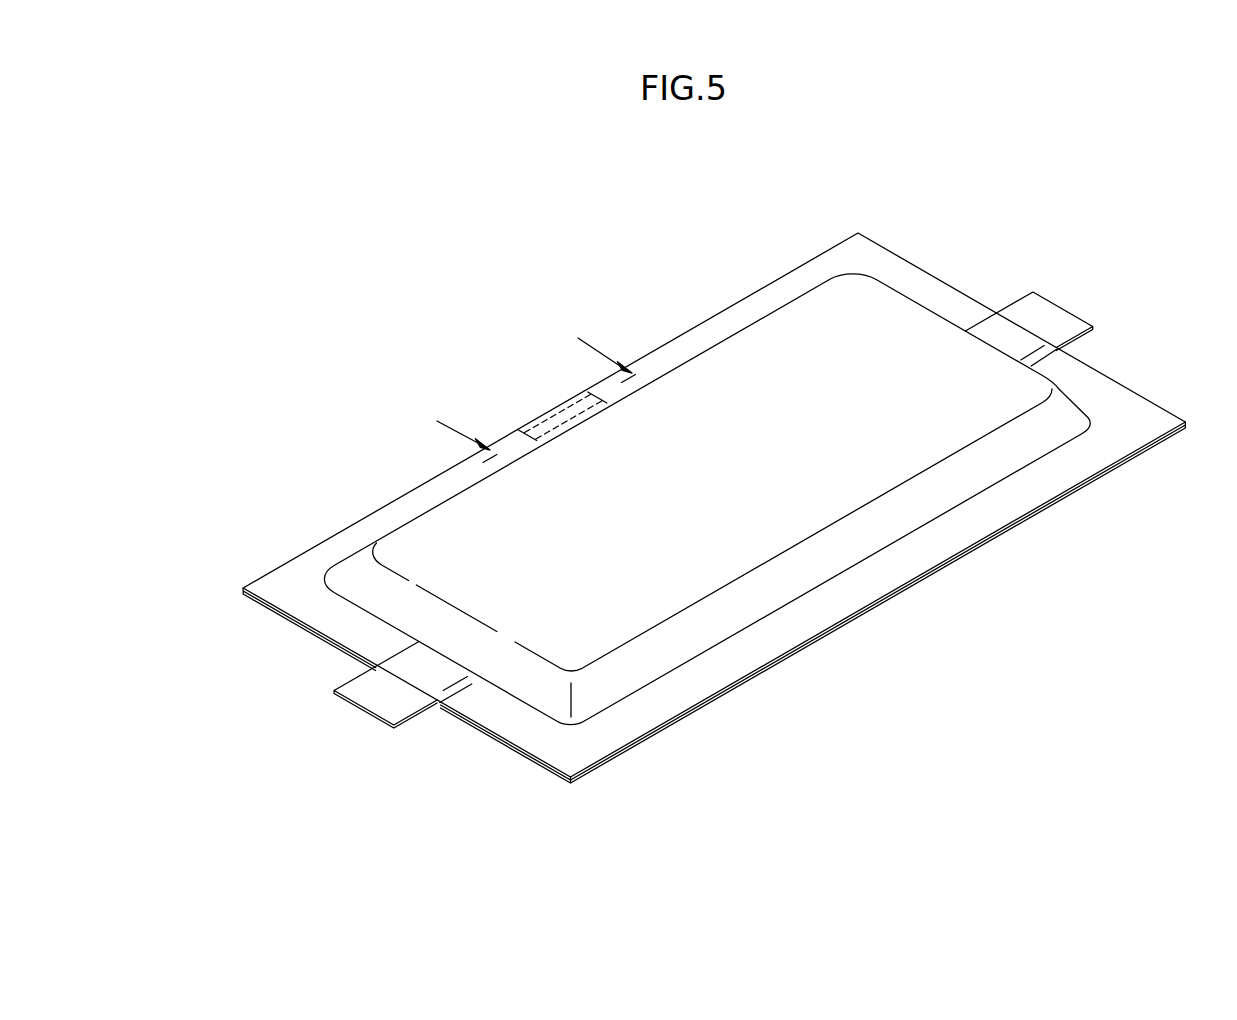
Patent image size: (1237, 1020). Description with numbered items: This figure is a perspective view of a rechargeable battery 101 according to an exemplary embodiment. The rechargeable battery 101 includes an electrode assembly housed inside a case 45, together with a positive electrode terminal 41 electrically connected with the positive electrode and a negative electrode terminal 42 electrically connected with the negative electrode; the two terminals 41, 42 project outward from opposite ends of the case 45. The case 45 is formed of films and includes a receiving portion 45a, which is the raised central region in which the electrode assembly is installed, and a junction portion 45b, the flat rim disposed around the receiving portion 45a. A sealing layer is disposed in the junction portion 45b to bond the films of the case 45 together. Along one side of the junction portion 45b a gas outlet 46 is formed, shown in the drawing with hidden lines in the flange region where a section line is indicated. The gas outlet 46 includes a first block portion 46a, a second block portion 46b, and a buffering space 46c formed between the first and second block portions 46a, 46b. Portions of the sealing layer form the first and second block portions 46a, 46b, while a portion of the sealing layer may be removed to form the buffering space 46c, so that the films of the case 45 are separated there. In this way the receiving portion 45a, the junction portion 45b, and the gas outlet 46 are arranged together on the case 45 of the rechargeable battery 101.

The rechargeable battery 101 is at (710, 149).
The positive electrode terminal 41 is at (370, 697).
The negative electrode terminal 42 is at (1055, 314).
The case 45 is at (780, 680).
The receiving portion 45a is at (825, 497).
The junction portion 45b is at (840, 602).
The gas outlet 46 is at (525, 305).
The first block portion 46a is at (578, 398).
The second block portion 46b is at (527, 426).
The buffering space 46c is at (558, 418).